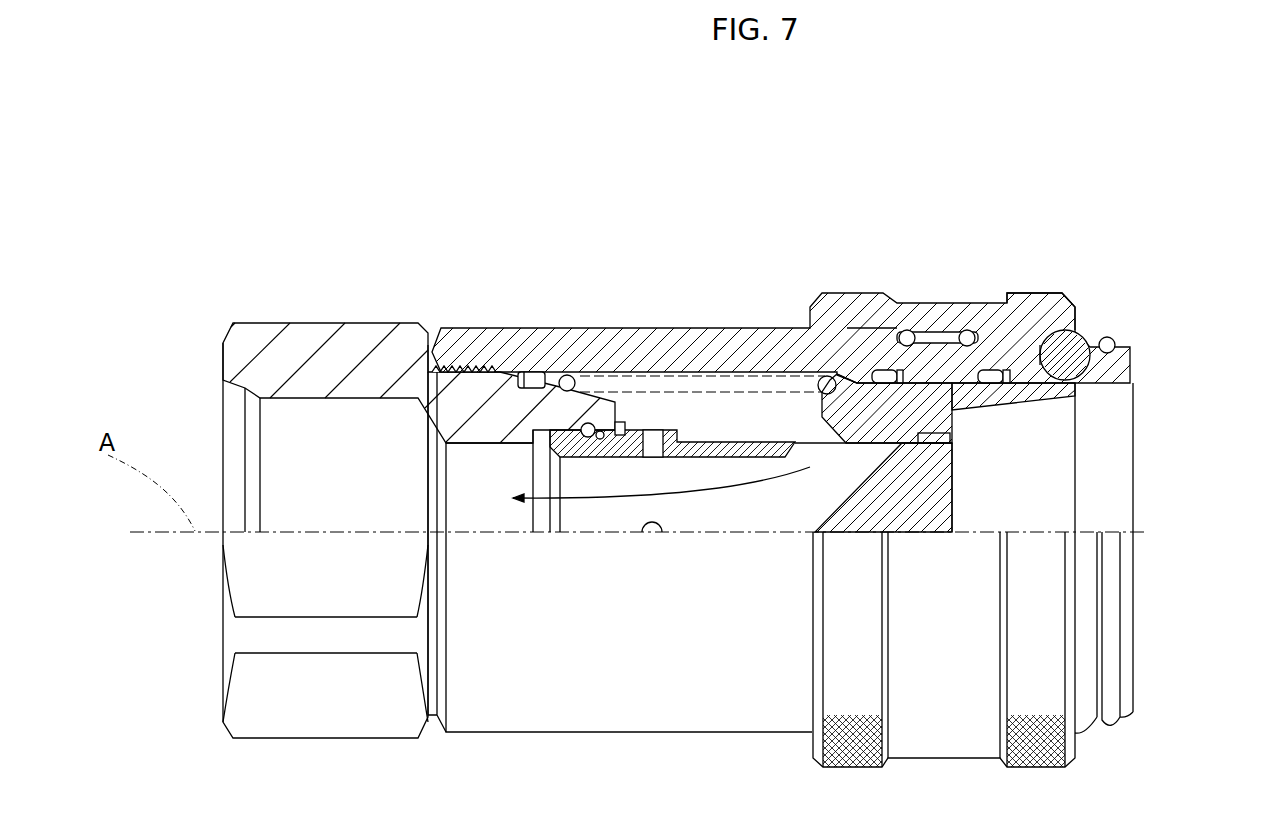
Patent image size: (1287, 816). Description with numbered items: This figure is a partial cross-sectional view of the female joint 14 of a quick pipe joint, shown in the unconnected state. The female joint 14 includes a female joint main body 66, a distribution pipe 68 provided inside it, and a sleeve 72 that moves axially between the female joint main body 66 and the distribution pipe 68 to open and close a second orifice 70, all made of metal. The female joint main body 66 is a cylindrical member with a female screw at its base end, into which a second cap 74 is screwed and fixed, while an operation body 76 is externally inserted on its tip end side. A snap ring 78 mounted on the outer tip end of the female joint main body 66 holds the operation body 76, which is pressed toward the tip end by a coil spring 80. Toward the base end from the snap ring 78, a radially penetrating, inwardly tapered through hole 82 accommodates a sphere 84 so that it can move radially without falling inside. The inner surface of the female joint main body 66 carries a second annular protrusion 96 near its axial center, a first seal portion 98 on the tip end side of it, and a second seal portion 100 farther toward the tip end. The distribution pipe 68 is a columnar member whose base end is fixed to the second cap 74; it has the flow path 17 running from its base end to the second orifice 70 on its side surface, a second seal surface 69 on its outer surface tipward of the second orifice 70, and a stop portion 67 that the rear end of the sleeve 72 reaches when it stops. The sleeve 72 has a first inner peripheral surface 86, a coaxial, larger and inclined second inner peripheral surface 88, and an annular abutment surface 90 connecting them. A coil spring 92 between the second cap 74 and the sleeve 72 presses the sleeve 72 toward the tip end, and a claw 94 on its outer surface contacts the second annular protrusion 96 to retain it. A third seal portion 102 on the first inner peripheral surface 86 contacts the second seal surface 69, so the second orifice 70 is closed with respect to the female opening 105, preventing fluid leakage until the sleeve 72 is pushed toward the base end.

The female joint 14 is at (485, 293).
The flow path 17 is at (703, 497).
The female joint main body 66 is at (642, 372).
The stop portion 67 is at (683, 440).
The distribution pipe 68 is at (703, 440).
The second seal surface 69 is at (953, 468).
The second orifice 70 is at (813, 437).
The sleeve 72 is at (935, 405).
The second cap 74 is at (317, 347).
The operation body 76 is at (1050, 295).
The snap ring 78 is at (1127, 350).
The coil spring 80 is at (966, 330).
The through hole 82 is at (1038, 343).
The sphere 84 is at (1082, 332).
The first inner peripheral surface 86 is at (953, 483).
The second inner peripheral surface 88 is at (1068, 413).
The annular abutment surface 90 is at (953, 423).
The coil spring 92 is at (593, 385).
The claw 94 is at (847, 437).
The second annular protrusion 96 is at (832, 488).
The first seal portion 98 is at (886, 377).
The second seal portion 100 is at (1000, 347).
The third seal portion 102 is at (953, 435).
The female opening 105 is at (1107, 465).